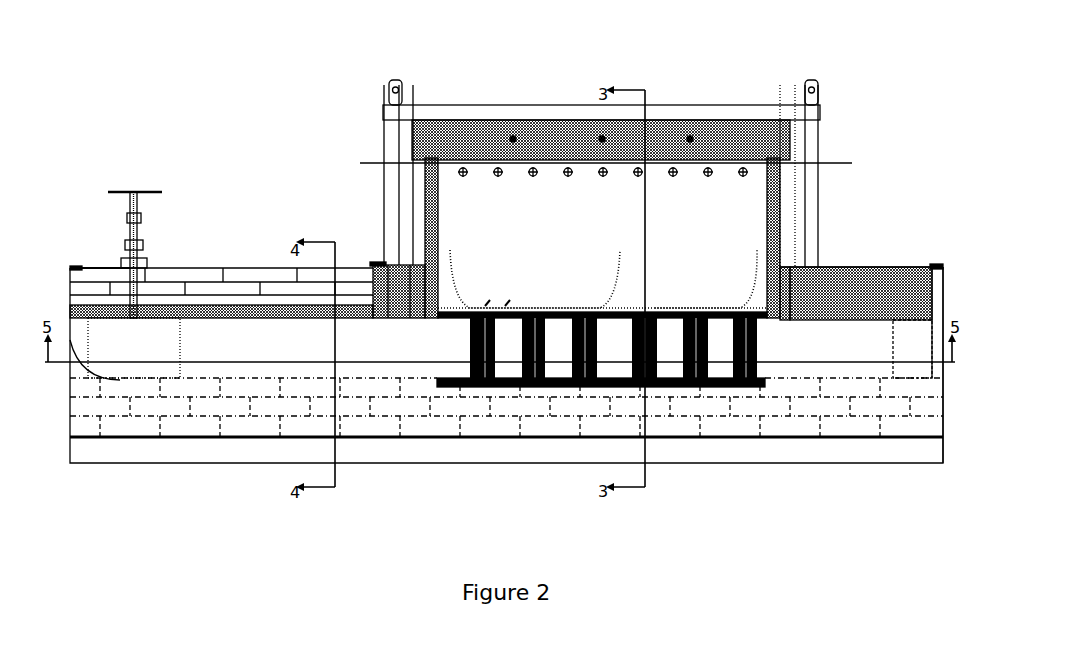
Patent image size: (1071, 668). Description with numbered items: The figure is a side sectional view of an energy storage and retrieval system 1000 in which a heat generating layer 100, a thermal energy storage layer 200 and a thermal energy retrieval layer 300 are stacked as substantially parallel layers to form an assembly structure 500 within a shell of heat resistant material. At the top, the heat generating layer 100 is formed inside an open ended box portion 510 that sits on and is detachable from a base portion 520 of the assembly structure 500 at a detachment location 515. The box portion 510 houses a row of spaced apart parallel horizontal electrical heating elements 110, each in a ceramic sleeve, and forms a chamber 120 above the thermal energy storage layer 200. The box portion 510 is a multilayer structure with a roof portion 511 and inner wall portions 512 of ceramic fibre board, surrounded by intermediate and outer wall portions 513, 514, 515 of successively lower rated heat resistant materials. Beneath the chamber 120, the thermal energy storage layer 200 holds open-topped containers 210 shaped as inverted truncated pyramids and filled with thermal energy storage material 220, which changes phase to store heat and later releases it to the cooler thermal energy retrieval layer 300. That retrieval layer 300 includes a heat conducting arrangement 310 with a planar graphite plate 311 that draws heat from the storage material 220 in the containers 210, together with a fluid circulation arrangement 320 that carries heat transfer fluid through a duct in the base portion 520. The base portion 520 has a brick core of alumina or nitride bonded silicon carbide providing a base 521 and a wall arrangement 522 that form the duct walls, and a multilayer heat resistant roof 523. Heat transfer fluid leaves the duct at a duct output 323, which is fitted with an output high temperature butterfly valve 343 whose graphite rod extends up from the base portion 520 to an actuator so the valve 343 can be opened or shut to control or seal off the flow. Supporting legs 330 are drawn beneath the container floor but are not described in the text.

The energy storage and retrieval system 1000 is at (266, 70).
The heat generating layer 100 is at (768, 175).
The electrical heating elements 110 is at (533, 167).
The chamber 120 is at (622, 195).
The thermal energy storage layer 200 is at (462, 268).
The open containers 210 is at (572, 255).
The thermal energy storage material 220 is at (487, 260).
The thermal energy retrieval layer 300 is at (262, 312).
The heat conducting arrangement 310 is at (608, 328).
The planar graphite plate 311 is at (465, 305).
The fluid circulation arrangement 320 is at (174, 348).
The duct output 323 is at (72, 342).
The support legs 330 is at (470, 350).
The output high temperature butterfly valve 343 is at (140, 192).
The assembly structure 500 is at (272, 262).
The box portion 510 is at (758, 105).
The roof portion 511 is at (530, 140).
The inner wall portion 512 is at (785, 213).
The intermediate wall portion 513 is at (797, 219).
The intermediate wall portion 514 is at (803, 222).
The outer wall portion 515 is at (385, 262).
The base portion 520 is at (943, 265).
The base 521 is at (448, 425).
The wall arrangement 522 is at (912, 368).
The roof 523 is at (108, 282).